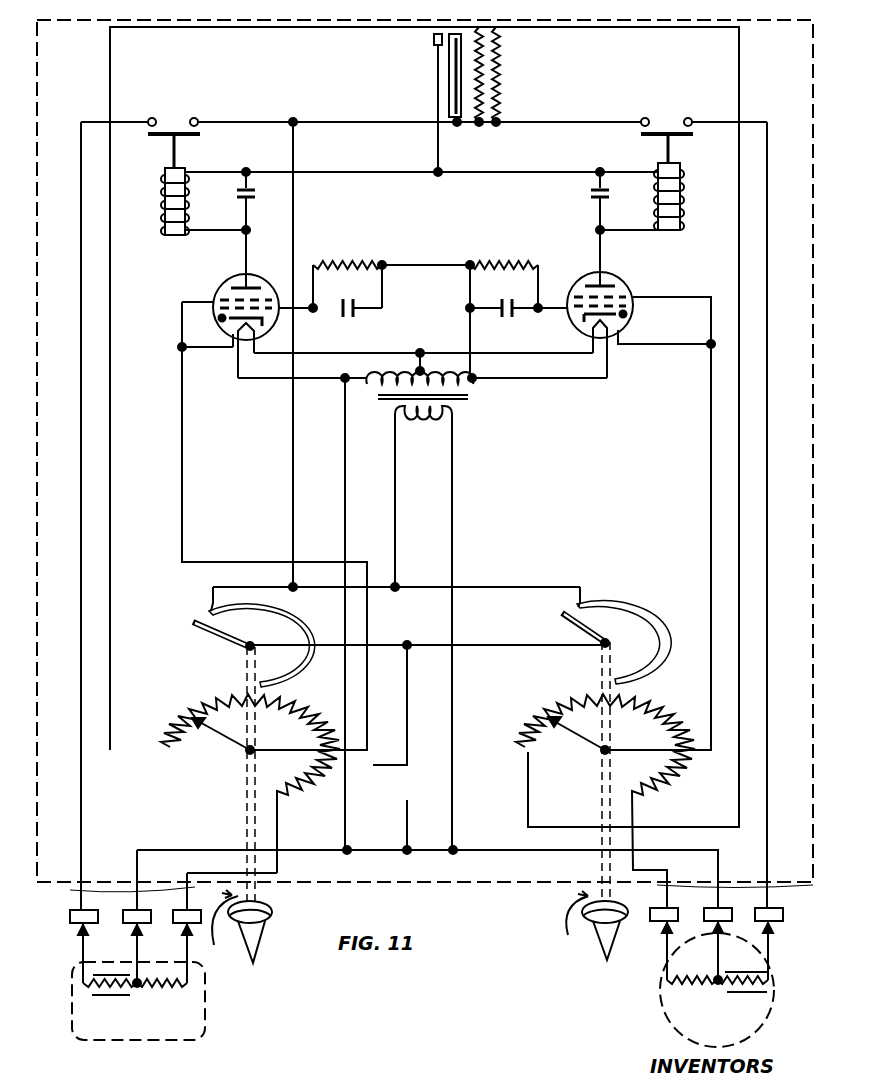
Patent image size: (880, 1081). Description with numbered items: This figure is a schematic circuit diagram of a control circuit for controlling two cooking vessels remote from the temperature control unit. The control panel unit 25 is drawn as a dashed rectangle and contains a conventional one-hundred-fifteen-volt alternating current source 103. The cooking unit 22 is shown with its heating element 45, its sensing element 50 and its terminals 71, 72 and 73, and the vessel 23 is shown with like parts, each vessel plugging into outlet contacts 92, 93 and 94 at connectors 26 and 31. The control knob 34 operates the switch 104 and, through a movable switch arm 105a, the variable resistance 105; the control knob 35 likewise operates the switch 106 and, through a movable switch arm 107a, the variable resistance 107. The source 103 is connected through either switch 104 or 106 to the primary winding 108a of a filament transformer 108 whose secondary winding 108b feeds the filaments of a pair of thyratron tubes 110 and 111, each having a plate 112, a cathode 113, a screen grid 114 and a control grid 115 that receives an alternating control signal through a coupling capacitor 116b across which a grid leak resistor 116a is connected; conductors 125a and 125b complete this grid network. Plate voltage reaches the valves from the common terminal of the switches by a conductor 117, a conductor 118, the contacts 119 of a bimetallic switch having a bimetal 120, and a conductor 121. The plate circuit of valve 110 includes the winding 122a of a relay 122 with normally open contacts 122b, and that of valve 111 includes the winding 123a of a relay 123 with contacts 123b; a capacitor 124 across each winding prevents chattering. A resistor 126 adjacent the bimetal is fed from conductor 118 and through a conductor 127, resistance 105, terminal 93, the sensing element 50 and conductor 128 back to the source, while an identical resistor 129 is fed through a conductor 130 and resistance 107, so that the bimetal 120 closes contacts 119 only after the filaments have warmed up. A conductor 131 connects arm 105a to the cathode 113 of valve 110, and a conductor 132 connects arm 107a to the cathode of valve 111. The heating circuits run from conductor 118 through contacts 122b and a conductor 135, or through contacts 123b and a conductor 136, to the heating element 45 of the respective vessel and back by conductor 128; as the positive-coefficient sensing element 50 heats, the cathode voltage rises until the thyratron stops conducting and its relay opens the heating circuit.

The cooking unit 22 is at (212, 996).
The vessel 23 is at (785, 998).
The control panel unit 25 is at (808, 45).
The connector 26 is at (68, 890).
The connector 31 is at (747, 886).
The control knob 34 is at (275, 922).
The control knob 35 is at (600, 935).
The heating element 45 is at (118, 992).
The sensing element 50 is at (158, 992).
The terminal 71 is at (80, 934).
The terminal 72 is at (185, 934).
The terminal 73 is at (135, 934).
The outlet contact 92 is at (80, 915).
The outlet terminal 93 is at (184, 915).
The outlet terminal 94 is at (133, 915).
The source of power 103 is at (376, 798).
The switch 104 is at (266, 636).
The variable resistance 105 is at (212, 716).
The movable switch arm 105a is at (228, 744).
The switch 106 is at (650, 645).
The variable resistance 107 is at (640, 700).
The movable switch arm 107a is at (572, 742).
The filament transformer 108 is at (422, 588).
The primary winding 108a is at (428, 418).
The secondary winding 108b is at (412, 368).
The thyratron tube 110 is at (262, 280).
The thyratron tube 111 is at (586, 274).
The plate 112 is at (238, 280).
The cathode 113 is at (232, 338).
The screen grid 114 is at (214, 298).
The control grid 115 is at (218, 318).
The grid leak resistor 116a is at (342, 262).
The coupling capacitor 116b is at (360, 291).
The conductor 117 is at (293, 252).
The conductor 118 is at (403, 126).
The contacts 119 is at (434, 40).
The bimetal 120 is at (455, 97).
The conductor 121 is at (450, 82).
The relay 122 is at (170, 184).
The relay winding 122a is at (163, 218).
The relay contacts 122b is at (194, 118).
The relay 123 is at (693, 194).
The relay winding 123a is at (686, 210).
The relay contacts 123b is at (688, 118).
The capacitor 124 is at (248, 188).
The conductor 125a is at (345, 492).
The conductor 125b is at (468, 328).
The resistor 126 is at (485, 56).
The conductor 127 is at (120, 28).
The conductor 128 is at (338, 848).
The resistor 129 is at (501, 95).
The conductor 130 is at (737, 300).
The conductor 131 is at (232, 562).
The conductor 132 is at (711, 470).
The conductor 135 is at (79, 372).
The conductor 136 is at (768, 470).